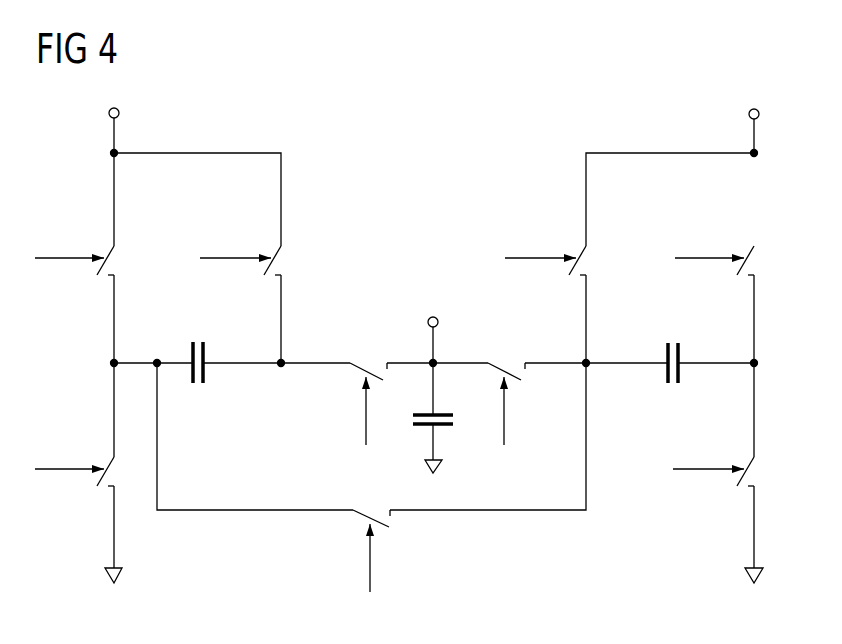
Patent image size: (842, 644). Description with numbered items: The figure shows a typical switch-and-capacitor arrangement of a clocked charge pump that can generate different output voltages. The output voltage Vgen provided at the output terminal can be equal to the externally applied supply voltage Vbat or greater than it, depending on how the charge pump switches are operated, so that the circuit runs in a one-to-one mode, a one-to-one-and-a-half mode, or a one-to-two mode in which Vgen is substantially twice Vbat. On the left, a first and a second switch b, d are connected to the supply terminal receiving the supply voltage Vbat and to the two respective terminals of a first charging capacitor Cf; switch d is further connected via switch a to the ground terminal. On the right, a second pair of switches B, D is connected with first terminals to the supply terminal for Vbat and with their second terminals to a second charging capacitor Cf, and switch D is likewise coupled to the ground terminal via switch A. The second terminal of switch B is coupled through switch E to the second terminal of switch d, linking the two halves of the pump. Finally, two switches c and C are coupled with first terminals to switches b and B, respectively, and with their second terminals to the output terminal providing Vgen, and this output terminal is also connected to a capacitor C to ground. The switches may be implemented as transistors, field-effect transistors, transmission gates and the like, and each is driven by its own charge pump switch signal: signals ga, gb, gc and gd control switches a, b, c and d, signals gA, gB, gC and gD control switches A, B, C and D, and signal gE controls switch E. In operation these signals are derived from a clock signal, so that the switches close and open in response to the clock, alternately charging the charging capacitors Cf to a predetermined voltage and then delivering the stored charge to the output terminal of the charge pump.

The supply voltage Vbat is at (434, 177).
The output voltage Vgen is at (434, 321).
The charging capacitor Cf is at (197, 342).
The switch C / capacitor C is at (492, 362).
The switch d is at (115, 250).
The charge pump switch signal gd is at (69, 242).
The switch b is at (282, 250).
The charge pump switch signal gb is at (235, 241).
The switch B is at (587, 250).
The charge pump switch signal gB is at (540, 242).
The switch D is at (755, 250).
The charge pump switch signal gD is at (709, 244).
The switch a is at (115, 461).
The charge pump switch signal ga is at (69, 454).
The switch A is at (755, 461).
The charge pump switch signal gA is at (708, 454).
The switch c is at (354, 362).
The charge pump switch signal gc is at (352, 411).
The charge pump switch signal gC is at (520, 411).
The switch E is at (358, 510).
The charge pump switch signal gE is at (356, 558).